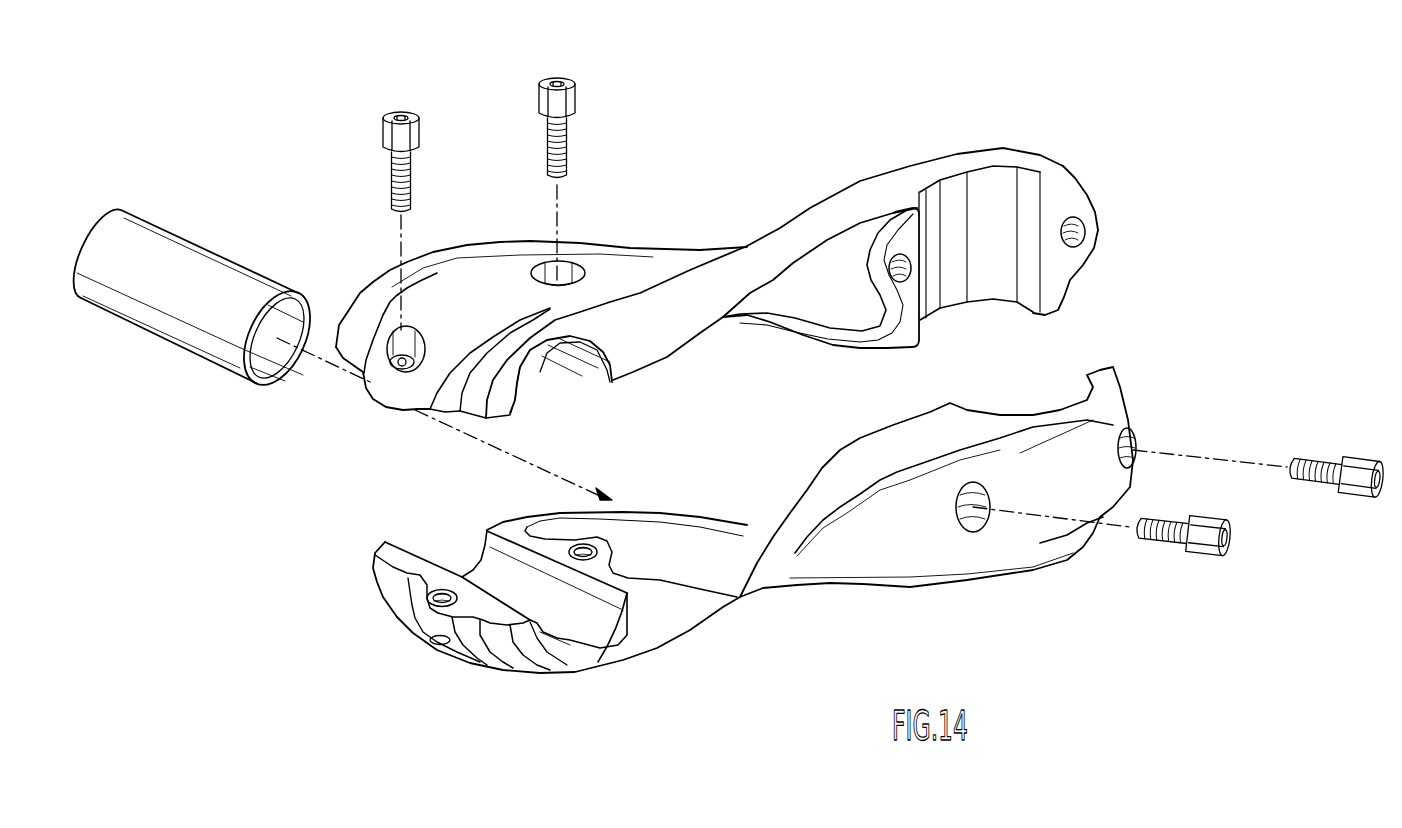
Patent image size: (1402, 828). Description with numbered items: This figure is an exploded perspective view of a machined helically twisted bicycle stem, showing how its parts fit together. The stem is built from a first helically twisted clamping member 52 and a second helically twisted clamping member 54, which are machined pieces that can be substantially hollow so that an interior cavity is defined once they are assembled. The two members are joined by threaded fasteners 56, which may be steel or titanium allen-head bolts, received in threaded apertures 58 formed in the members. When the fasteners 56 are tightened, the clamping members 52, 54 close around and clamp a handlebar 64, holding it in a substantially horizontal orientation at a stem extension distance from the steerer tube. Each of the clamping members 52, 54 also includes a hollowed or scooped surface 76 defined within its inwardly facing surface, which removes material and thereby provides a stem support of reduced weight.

The first helically twisted clamping member 52 is at (373, 300).
The second helically twisted clamping member 54 is at (660, 650).
The threaded fasteners 56 is at (401, 112).
The threaded apertures 58 is at (405, 574).
The handlebar 64 is at (197, 339).
The hollowed or scooped surface 76 is at (822, 282).